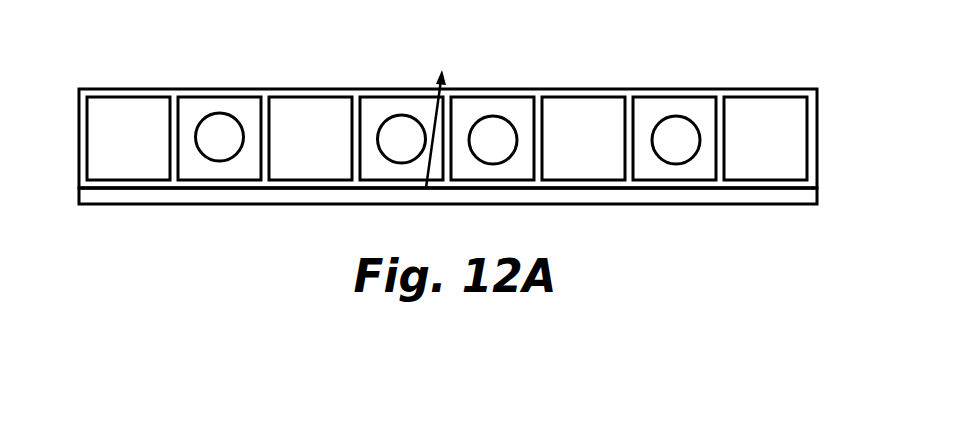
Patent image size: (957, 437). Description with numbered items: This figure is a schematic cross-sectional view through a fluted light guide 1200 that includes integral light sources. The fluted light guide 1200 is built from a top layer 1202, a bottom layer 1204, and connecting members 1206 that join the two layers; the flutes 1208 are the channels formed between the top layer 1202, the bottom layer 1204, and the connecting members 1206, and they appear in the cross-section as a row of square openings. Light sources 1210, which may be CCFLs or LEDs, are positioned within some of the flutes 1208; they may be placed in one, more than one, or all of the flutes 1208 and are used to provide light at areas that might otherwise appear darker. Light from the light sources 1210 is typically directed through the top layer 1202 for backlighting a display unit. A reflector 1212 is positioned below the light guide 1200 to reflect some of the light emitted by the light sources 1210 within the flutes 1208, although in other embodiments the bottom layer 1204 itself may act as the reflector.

The fluted light guide 1200 is at (133, 65).
The top layer 1202 is at (219, 90).
The bottom layer 1204 is at (245, 188).
The connecting members 1206 is at (348, 155).
The flutes 1208 is at (502, 103).
The light sources 1210 is at (676, 164).
The reflector 1212 is at (110, 205).